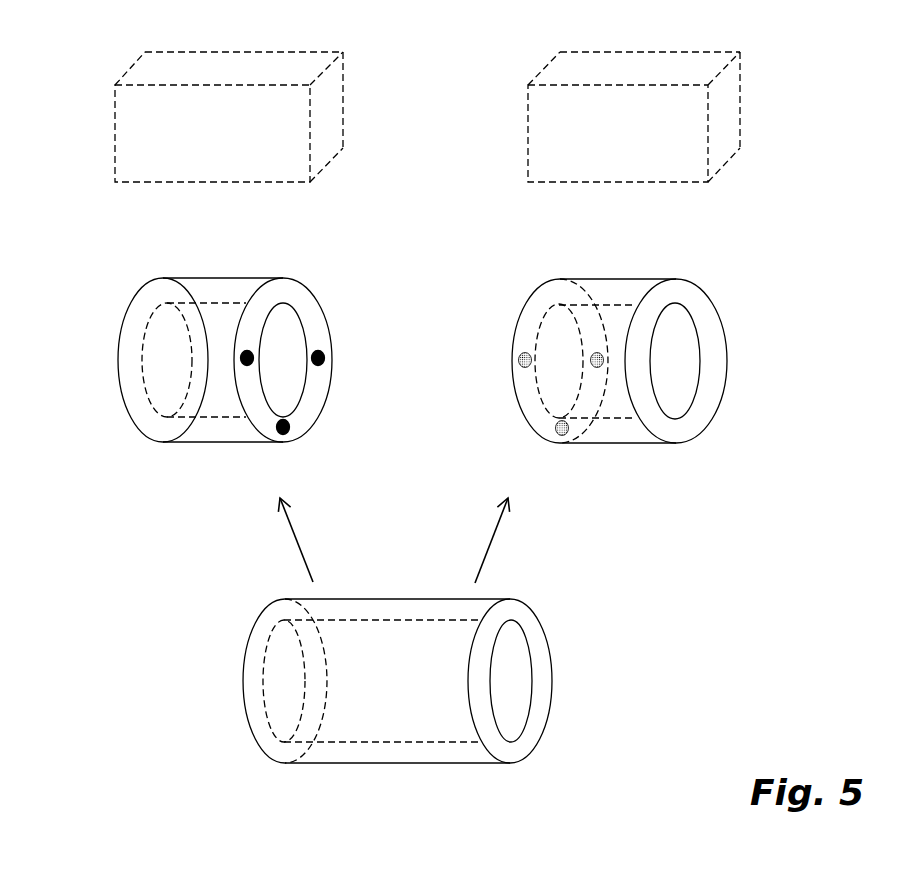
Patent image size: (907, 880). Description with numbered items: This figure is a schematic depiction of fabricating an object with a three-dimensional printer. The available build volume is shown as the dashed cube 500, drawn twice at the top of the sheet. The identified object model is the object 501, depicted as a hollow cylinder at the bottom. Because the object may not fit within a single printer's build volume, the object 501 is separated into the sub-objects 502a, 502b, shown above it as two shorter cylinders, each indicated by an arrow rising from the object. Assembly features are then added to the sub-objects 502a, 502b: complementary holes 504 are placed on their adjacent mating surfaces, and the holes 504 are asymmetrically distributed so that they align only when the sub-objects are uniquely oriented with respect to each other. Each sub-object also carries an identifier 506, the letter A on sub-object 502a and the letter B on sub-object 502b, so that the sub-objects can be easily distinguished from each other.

The cube 500 is at (283, 62).
The object 501 is at (392, 763).
The sub-object 502a is at (210, 442).
The sub-object 502b is at (643, 443).
The holes 504 is at (325, 358).
The identifiers 506 is at (283, 287).